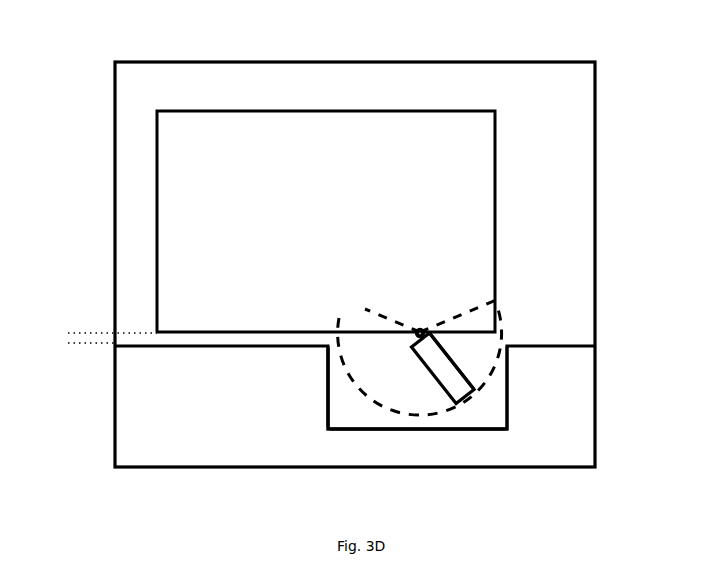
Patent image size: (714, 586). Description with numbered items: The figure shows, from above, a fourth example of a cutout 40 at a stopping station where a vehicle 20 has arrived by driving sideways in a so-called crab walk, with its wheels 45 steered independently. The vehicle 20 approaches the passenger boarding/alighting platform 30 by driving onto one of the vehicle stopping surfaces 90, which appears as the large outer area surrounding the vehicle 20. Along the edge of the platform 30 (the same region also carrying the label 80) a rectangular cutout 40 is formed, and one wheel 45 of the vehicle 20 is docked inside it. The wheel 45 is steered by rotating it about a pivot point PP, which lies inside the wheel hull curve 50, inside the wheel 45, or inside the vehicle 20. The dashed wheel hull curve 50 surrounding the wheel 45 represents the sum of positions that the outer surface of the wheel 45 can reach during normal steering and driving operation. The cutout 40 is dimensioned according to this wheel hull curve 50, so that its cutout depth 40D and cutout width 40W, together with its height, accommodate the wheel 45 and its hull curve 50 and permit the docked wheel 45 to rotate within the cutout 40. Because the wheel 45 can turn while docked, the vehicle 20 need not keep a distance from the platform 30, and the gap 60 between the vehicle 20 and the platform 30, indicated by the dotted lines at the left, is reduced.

The vehicle stopping surface 90 is at (567, 60).
The vehicle 20 is at (326, 221).
The passenger boarding/alighting platform 30 is at (355, 387).
The lower base portion 80 is at (355, 387).
The cutout 40 is at (417, 387).
The cutout depth 40D is at (322, 396).
The cutout width 40W is at (417, 474).
The gap 60 is at (68, 340).
The pivot point PP is at (414, 330).
The wheel hull curve 50 is at (463, 303).
The wheel 45 is at (460, 358).